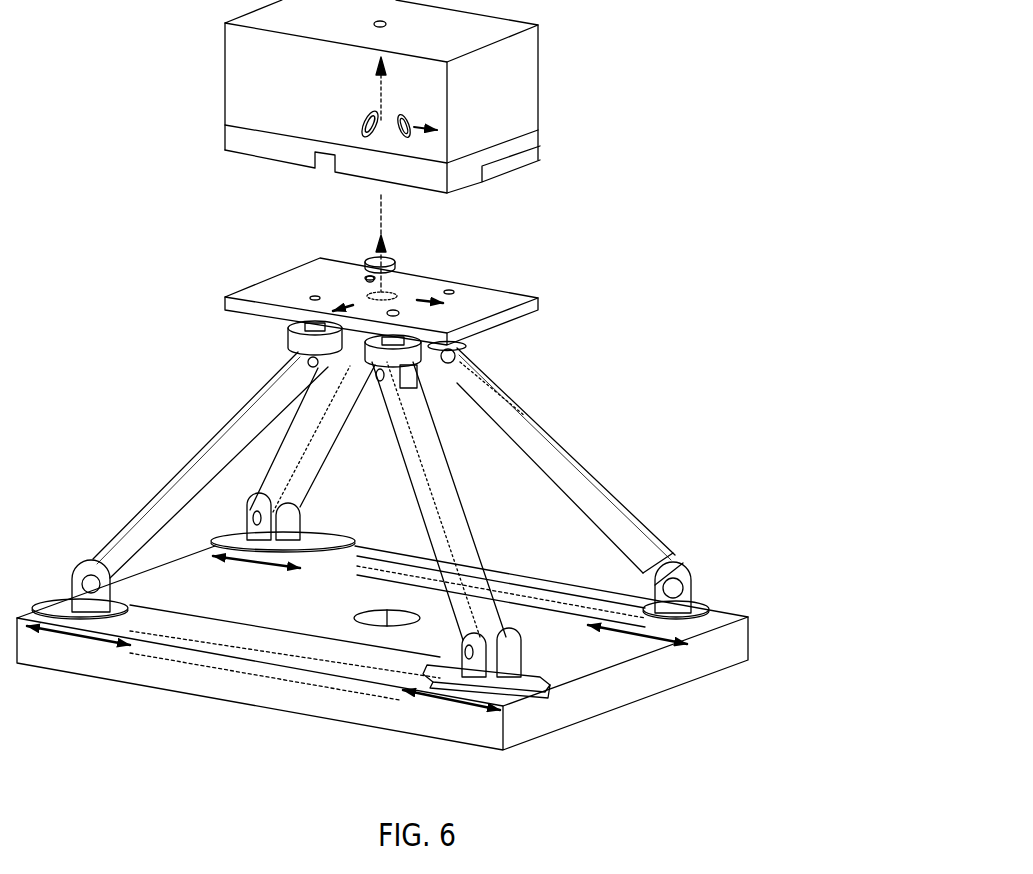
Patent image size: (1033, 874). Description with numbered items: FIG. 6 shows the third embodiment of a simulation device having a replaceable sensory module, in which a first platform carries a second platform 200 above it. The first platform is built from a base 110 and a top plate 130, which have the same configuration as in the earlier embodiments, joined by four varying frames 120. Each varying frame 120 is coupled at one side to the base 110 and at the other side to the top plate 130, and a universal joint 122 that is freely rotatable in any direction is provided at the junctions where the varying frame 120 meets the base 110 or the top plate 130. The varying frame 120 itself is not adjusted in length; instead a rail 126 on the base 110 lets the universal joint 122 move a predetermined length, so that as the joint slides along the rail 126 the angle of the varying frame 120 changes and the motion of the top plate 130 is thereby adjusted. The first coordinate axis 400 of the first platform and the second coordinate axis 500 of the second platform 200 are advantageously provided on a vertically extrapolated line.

The base 110 is at (640, 685).
The varying frame 120 is at (743, 463).
The universal joint 122 is at (655, 588).
The rail 126 is at (708, 608).
The top plate 130 is at (515, 288).
The second platform 200 is at (540, 86).
The first coordinate axis 400 is at (377, 256).
The second coordinate axis 500 is at (350, 133).